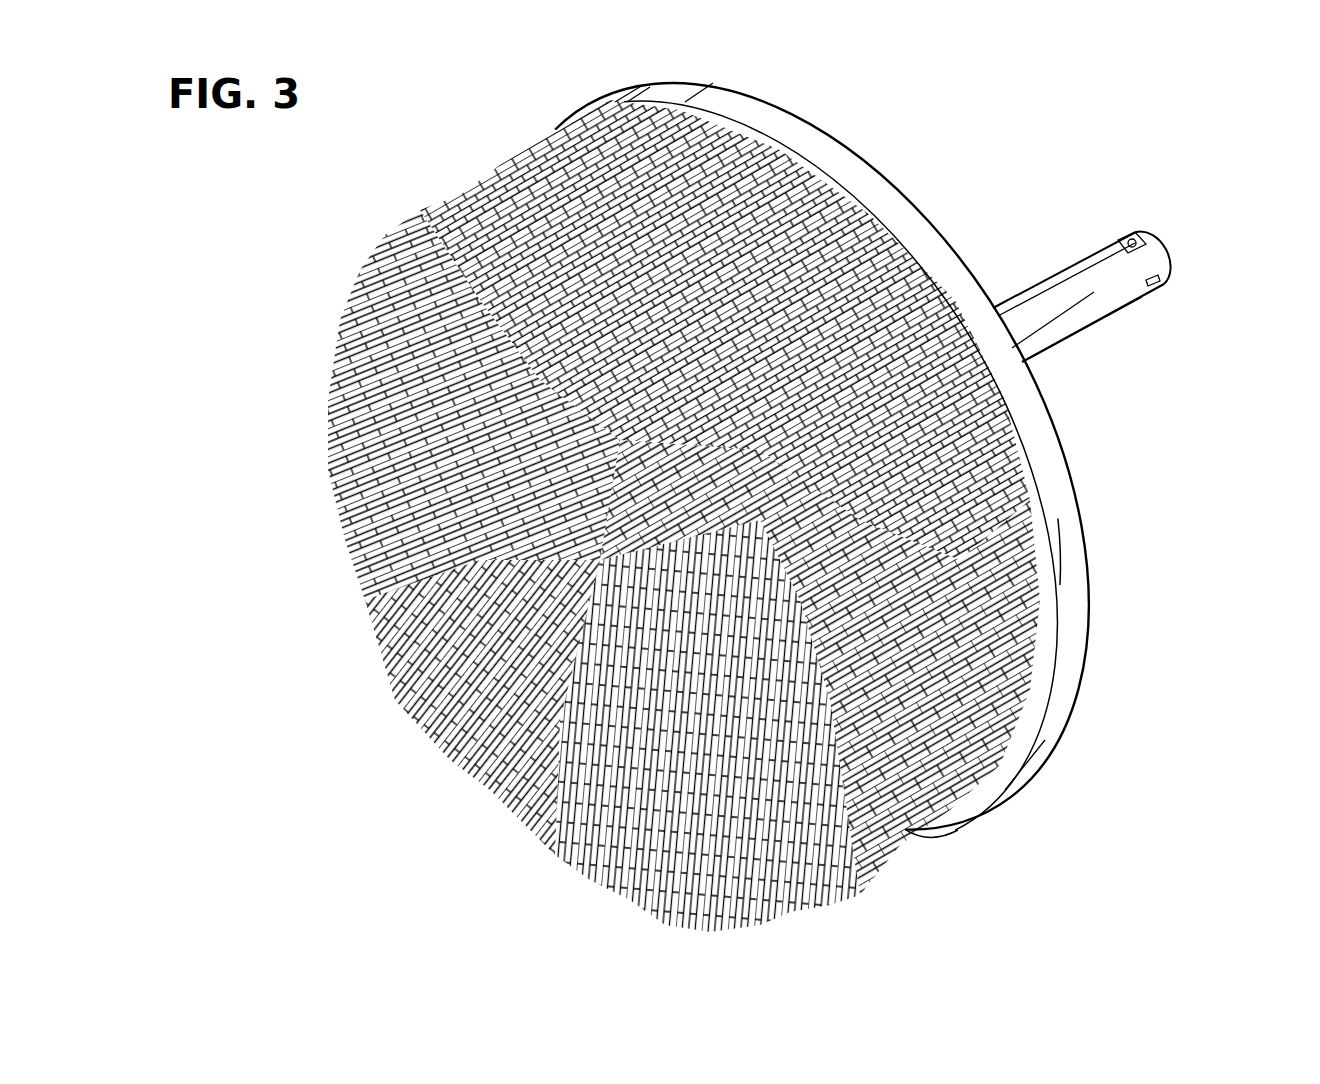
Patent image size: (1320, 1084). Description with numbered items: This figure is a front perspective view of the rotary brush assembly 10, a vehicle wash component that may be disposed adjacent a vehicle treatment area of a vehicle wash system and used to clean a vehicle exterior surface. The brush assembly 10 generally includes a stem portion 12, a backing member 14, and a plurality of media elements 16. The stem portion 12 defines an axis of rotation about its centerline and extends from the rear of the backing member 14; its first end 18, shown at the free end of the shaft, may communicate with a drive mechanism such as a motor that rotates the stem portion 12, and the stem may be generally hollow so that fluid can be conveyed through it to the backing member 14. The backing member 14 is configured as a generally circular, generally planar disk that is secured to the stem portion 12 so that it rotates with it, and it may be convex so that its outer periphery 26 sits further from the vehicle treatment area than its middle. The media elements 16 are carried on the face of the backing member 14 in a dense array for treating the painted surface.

The rotary brush assembly 10 is at (592, 93).
The stem portion 12 is at (1085, 270).
The backing member 14 is at (1064, 705).
The media elements 16 is at (807, 890).
The first end 18 is at (1172, 250).
The outer periphery 26 is at (1060, 527).